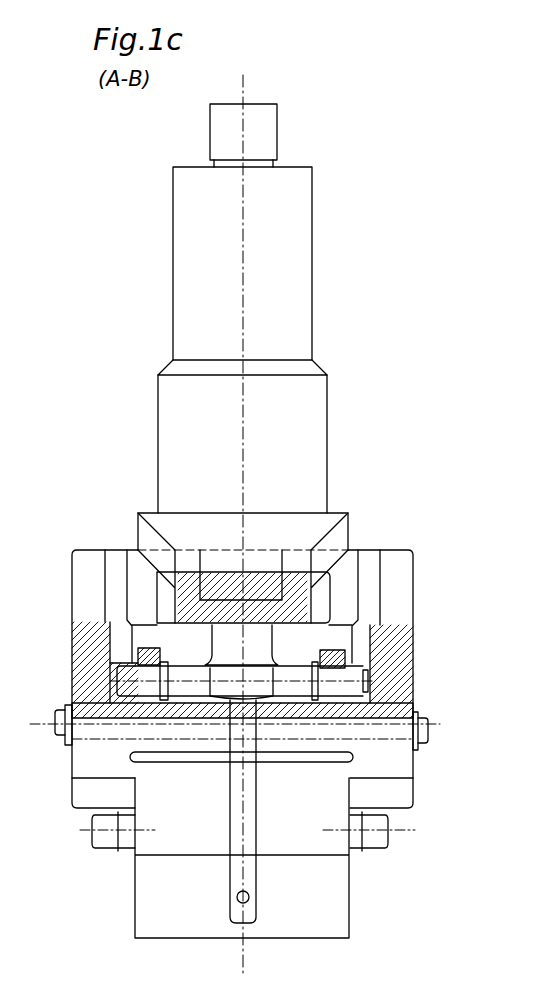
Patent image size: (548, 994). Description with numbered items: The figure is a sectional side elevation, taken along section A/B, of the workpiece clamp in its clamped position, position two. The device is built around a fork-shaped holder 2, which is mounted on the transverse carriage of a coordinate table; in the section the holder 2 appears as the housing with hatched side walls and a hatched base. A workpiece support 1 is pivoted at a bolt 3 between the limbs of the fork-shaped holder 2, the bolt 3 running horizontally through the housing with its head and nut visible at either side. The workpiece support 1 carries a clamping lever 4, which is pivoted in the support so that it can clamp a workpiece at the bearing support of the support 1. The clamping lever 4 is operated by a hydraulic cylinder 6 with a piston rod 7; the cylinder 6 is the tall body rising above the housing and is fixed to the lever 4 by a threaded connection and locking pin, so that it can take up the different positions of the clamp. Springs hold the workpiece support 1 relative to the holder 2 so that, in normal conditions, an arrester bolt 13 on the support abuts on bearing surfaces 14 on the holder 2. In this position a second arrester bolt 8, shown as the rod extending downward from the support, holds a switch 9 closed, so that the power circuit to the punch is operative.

The workpiece support 1 is at (393, 713).
The fork-shaped holder 2 is at (85, 652).
The bolt 3 is at (57, 736).
The clamping lever 4 is at (312, 525).
The hydraulic cylinder 6 is at (292, 278).
The piston rod 7 is at (255, 638).
The arrester bolt 8 is at (254, 900).
The switch 9 is at (328, 925).
The arrester bolt 13 is at (357, 672).
The bearing surfaces 14 is at (130, 687).